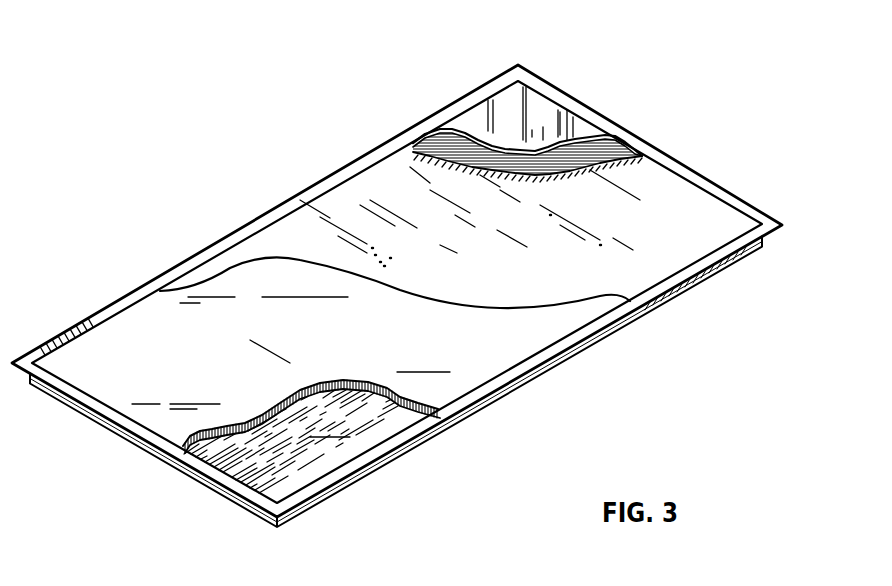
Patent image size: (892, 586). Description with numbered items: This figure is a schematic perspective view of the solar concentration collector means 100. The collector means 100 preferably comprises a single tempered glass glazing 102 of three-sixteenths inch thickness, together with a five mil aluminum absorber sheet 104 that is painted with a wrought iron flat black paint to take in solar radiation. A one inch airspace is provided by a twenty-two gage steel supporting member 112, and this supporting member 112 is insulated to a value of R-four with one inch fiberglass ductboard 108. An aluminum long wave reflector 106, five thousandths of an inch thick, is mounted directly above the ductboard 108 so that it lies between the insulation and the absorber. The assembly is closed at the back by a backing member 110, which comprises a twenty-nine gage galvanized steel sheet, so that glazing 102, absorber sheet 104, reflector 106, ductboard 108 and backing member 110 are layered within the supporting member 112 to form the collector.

The solar concentration collector means 100 is at (622, 53).
The tempered glass glazing 102 is at (577, 126).
The aluminum absorber sheet 104 is at (615, 148).
The aluminum long wave reflector 106 is at (648, 273).
The fiberglass ductboard 108 is at (152, 413).
The backing member 110 is at (247, 470).
The steel supporting member 112 is at (428, 433).